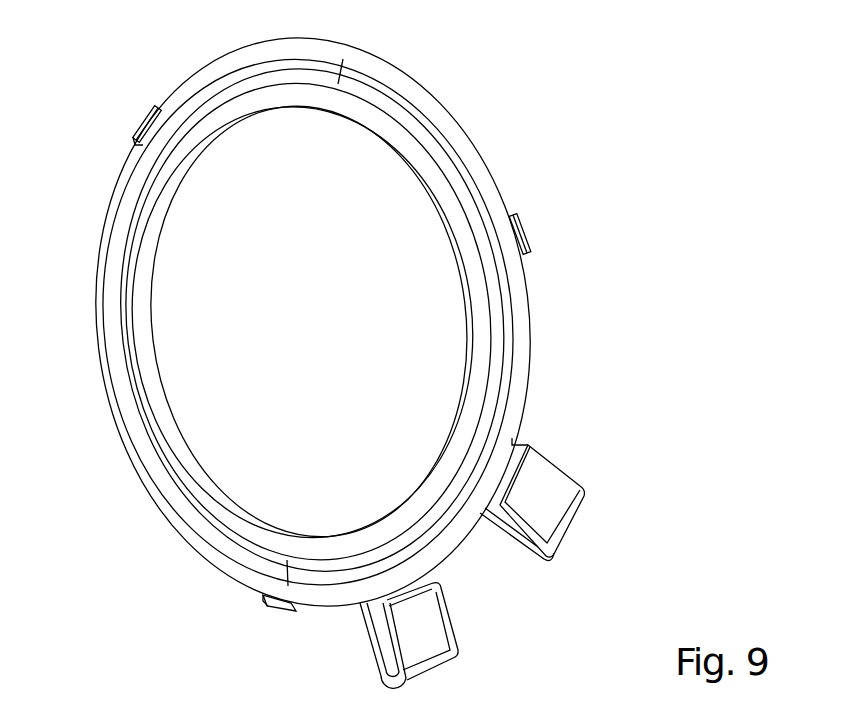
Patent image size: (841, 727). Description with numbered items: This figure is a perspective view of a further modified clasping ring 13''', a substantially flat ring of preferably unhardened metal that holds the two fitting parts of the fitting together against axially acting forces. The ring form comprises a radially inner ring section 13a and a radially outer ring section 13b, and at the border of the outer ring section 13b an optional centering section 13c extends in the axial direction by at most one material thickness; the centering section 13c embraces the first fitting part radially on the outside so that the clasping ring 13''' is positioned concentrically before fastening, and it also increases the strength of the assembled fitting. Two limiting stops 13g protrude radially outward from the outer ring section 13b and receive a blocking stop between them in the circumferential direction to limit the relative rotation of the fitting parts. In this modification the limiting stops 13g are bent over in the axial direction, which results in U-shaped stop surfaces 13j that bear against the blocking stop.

The further modified clasping ring 13''' is at (333, 322).
The inner ring section 13a is at (225, 505).
The outer ring section 13b is at (160, 490).
The centering section 13c is at (147, 120).
The stop surface 13j is at (565, 468).
The limiting stop 13g is at (567, 540).